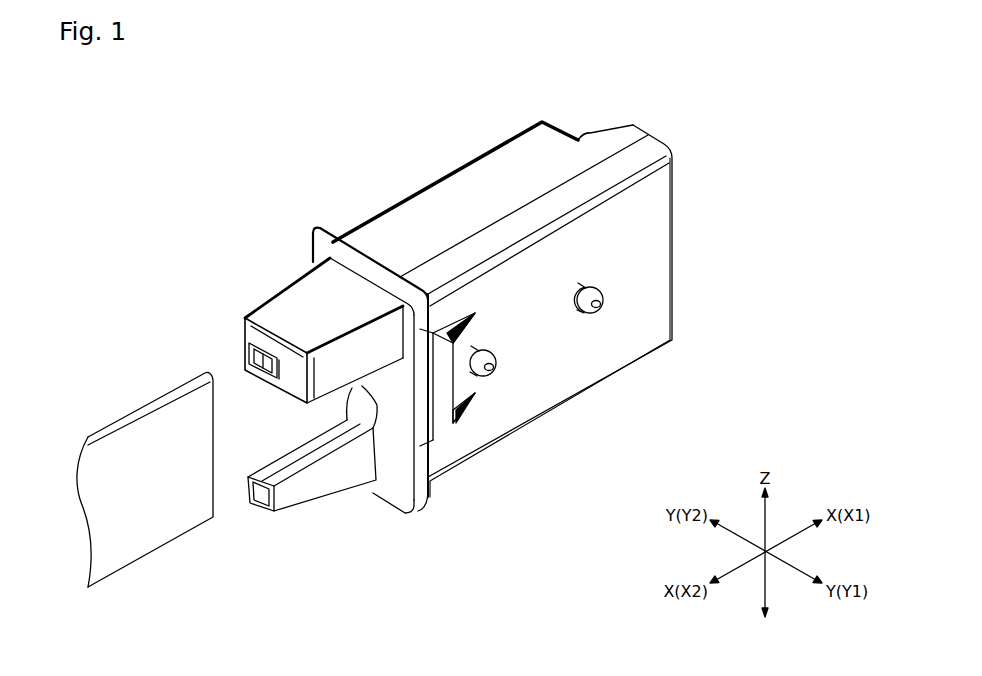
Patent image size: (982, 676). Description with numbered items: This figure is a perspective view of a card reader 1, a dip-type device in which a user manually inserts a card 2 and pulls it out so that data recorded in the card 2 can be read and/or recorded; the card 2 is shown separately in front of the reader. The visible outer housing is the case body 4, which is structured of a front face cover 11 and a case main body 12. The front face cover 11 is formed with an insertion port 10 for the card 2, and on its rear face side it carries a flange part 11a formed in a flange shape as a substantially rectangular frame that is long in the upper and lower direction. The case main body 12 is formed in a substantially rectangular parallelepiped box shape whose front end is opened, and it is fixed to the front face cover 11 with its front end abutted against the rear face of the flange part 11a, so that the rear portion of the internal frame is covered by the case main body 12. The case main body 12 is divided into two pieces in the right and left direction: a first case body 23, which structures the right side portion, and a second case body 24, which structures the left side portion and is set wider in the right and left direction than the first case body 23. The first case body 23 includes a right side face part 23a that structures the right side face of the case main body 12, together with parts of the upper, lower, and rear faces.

The card reader 1 is at (182, 164).
The card 2 is at (150, 402).
The case body 4 is at (363, 182).
The insertion port 10 is at (250, 356).
The front face cover 11 is at (288, 283).
The flange part 11a is at (431, 496).
The case main body 12 is at (358, 232).
The first case body 23 is at (676, 243).
The right side face part 23a is at (604, 247).
The second case body 24 is at (542, 122).